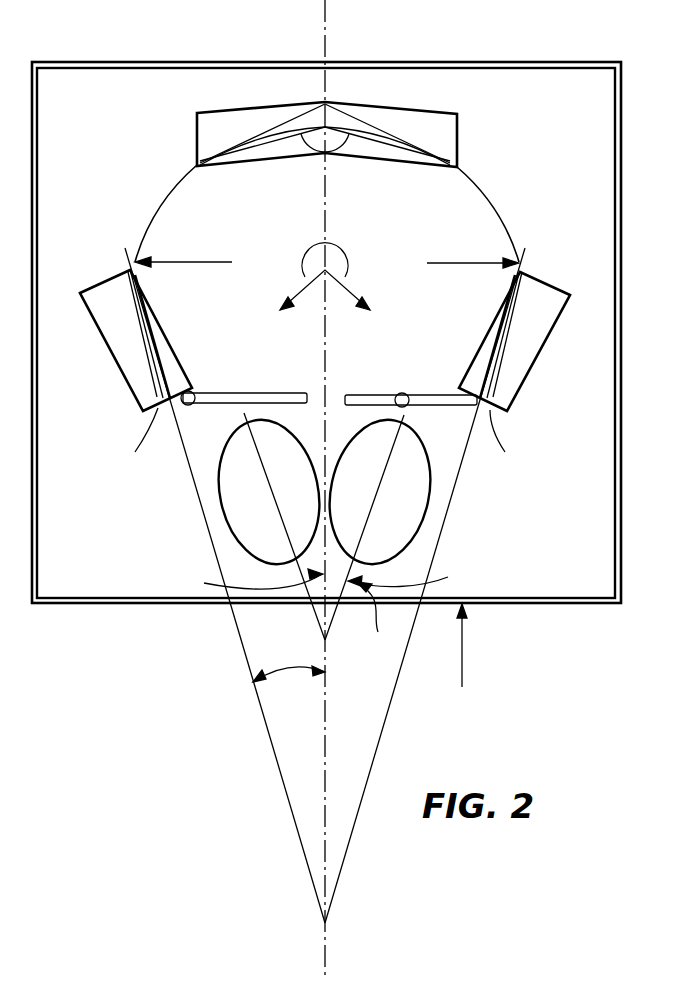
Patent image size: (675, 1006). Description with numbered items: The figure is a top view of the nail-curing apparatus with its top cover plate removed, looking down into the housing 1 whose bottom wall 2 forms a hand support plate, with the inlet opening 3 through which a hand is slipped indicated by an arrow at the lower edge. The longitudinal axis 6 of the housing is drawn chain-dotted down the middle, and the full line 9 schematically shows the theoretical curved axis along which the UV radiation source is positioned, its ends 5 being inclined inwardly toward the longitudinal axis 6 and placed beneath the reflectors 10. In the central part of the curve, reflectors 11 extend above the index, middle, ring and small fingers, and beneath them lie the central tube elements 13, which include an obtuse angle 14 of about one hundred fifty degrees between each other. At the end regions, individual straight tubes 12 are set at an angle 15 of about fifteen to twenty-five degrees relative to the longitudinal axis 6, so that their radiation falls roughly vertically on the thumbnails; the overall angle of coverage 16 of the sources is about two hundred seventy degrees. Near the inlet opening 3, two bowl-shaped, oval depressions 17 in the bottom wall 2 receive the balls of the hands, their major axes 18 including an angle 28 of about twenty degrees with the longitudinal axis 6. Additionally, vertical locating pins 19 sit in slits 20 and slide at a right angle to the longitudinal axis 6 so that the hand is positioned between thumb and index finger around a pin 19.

The housing 1 is at (621, 187).
The bottom wall 2 is at (524, 85).
The inlet opening 3 is at (479, 645).
The ends of the radiation source 5 is at (319, 445).
The longitudinal axis 6 is at (328, 52).
The line 9 is at (503, 212).
The reflectors 10 is at (136, 394).
The reflectors 11 is at (263, 118).
The straight tubes 12 is at (132, 312).
The central tube elements 13 is at (248, 148).
The obtuse angle 14 is at (313, 148).
The angle 15 is at (285, 673).
The angle of coverage 16 is at (348, 271).
The depressions 17 is at (237, 510).
The major axes 18 is at (327, 526).
The pins 19 is at (194, 393).
The slits 20 is at (285, 395).
The angle 28 is at (376, 622).